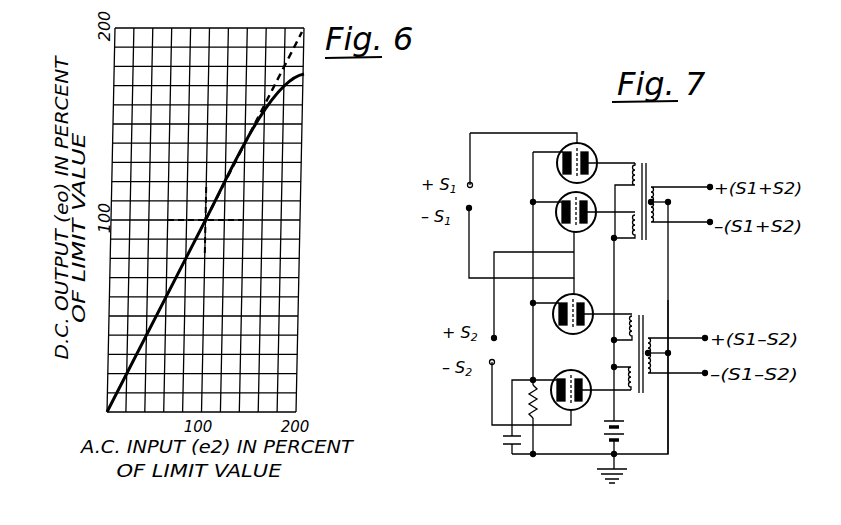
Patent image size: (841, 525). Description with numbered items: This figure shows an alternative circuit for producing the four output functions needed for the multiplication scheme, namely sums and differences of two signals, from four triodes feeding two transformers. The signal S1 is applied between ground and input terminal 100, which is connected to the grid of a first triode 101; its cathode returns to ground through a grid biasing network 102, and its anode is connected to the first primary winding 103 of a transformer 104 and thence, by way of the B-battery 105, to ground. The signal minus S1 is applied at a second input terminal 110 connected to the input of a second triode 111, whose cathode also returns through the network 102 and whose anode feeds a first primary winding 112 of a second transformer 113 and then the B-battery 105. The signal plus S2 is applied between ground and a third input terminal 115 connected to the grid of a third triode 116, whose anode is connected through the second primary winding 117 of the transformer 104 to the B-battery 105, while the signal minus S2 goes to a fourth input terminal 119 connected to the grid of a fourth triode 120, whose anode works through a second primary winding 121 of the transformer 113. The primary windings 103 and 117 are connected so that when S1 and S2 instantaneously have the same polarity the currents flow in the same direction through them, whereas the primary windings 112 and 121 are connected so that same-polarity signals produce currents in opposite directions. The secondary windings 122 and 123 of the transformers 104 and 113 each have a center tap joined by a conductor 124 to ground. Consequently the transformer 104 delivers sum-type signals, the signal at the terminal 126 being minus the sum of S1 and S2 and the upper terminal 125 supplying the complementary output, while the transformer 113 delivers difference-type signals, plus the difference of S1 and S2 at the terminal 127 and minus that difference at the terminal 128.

The input terminal 100 is at (471, 183).
The second input terminal 110 is at (471, 210).
The first triode 101 is at (580, 144).
The third triode 116 is at (580, 231).
The first primary winding 103 is at (633, 177).
The transformer 104 is at (662, 158).
The second primary winding 117 is at (617, 240).
The secondary winding 122 is at (656, 187).
The upper terminal 125 is at (710, 186).
The terminal 126 is at (710, 225).
The second triode 111 is at (579, 296).
The third input terminal 115 is at (500, 326).
The fourth input terminal 119 is at (494, 363).
The fourth triode 120 is at (562, 360).
The first primary winding 112 is at (612, 340).
The transformer 113 is at (652, 310).
The second primary winding 121 is at (620, 391).
The secondary winding 123 is at (656, 368).
The terminal 127 is at (705, 337).
The terminal 128 is at (706, 375).
The conductor 124 is at (669, 432).
The B-battery 105 is at (619, 428).
The grid biasing network 102 is at (514, 452).